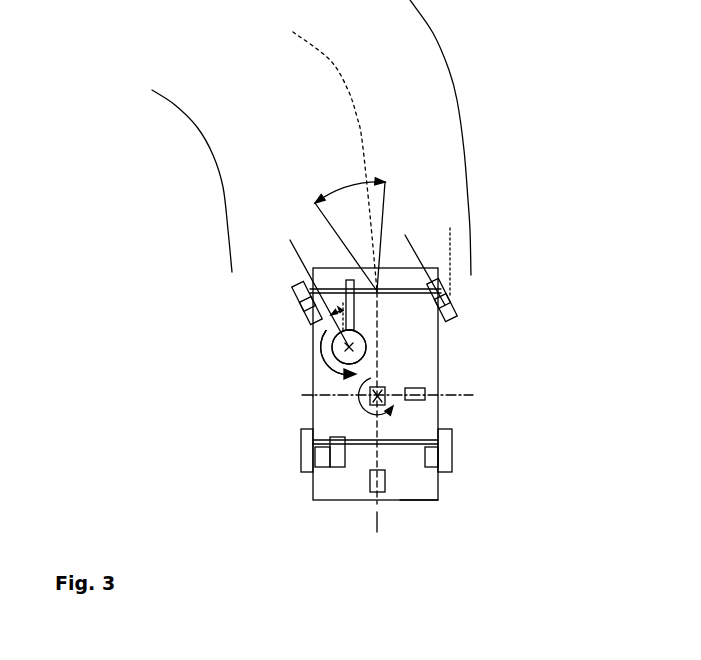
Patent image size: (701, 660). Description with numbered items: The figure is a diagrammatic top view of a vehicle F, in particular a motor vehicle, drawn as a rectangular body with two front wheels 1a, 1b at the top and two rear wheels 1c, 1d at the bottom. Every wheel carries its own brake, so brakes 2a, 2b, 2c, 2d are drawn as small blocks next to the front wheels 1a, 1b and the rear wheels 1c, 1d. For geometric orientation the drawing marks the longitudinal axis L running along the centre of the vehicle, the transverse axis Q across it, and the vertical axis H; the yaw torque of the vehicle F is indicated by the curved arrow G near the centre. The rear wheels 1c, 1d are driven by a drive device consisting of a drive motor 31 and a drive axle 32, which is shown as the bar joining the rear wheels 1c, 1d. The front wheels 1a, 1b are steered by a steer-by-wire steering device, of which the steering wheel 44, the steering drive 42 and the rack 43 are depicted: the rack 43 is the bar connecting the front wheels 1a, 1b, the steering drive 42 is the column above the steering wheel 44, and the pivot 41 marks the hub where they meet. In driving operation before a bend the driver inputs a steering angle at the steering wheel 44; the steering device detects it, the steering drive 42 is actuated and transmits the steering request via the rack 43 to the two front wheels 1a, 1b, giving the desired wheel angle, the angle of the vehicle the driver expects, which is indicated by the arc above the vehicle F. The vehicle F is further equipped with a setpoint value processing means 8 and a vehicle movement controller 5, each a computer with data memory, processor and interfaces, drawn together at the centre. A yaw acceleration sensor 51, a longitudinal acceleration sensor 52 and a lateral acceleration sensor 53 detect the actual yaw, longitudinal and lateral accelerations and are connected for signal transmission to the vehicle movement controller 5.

The front wheel 1a is at (308, 310).
The front wheel 1b is at (460, 310).
The rear wheel 1c is at (302, 443).
The rear wheel 1d is at (445, 450).
The brake 2a is at (313, 298).
The brake 2b is at (450, 297).
The brake 2c is at (318, 463).
The brake 2d is at (438, 473).
The vehicle movement controller 5 is at (343, 377).
The setpoint value processing means 8 is at (332, 353).
The drive motor 31 is at (338, 462).
The drive axle 32 is at (375, 454).
The pivot bearing 41 is at (355, 347).
The steering drive 42 is at (352, 317).
The rack 43 is at (386, 289).
The steering wheel 44 is at (349, 347).
The yaw acceleration sensor 51 is at (386, 389).
The longitudinal acceleration sensor 52 is at (380, 485).
The lateral acceleration sensor 53 is at (427, 399).
The transverse axis Q is at (310, 395).
The arrow indicating yaw torque G is at (368, 407).
The vertical axis H is at (392, 408).
The longitudinal axis L is at (375, 518).
The vehicle F is at (427, 490).